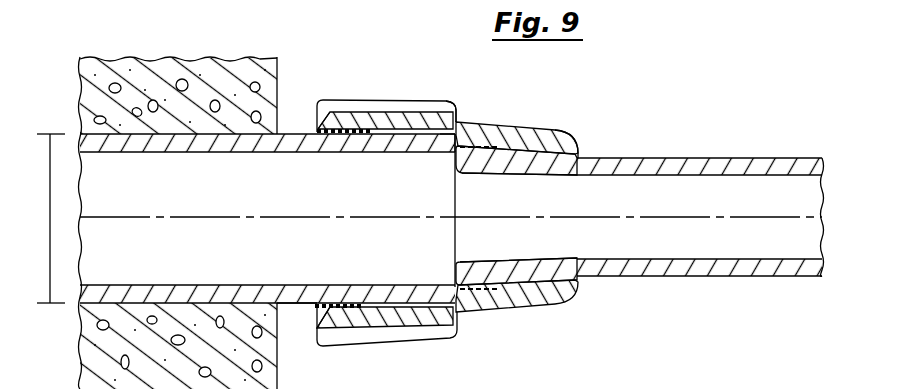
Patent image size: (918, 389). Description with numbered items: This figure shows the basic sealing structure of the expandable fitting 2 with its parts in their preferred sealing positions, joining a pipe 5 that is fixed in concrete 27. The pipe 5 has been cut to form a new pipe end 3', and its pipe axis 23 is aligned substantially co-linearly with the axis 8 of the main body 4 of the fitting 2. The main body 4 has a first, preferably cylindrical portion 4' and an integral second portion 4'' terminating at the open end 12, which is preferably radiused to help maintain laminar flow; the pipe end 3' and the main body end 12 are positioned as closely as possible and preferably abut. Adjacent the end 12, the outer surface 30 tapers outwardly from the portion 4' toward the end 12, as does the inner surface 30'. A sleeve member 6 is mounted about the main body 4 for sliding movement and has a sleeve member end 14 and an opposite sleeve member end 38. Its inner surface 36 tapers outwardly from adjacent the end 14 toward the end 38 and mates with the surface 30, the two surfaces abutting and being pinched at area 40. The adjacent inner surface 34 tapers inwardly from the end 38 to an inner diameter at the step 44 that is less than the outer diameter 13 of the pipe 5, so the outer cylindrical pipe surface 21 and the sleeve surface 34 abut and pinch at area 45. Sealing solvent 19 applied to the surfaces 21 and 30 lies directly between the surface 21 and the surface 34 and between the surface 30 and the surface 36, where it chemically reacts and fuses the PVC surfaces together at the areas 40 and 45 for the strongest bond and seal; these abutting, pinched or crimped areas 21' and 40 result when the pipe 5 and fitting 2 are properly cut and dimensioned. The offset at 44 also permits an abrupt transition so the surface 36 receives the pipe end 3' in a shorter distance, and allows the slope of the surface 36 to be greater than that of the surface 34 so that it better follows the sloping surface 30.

The fitting 2 is at (569, 161).
The new pipe end 3' is at (396, 210).
The main body 4 is at (699, 173).
The first cylindrical portion 4' is at (794, 192).
The second portion 4'' is at (517, 182).
The pipe 5 is at (297, 306).
The sleeve member 6 is at (389, 180).
The main body axis 8 is at (666, 217).
The open end of main body 12 is at (457, 253).
The outer diameter of pipe 13 is at (50, 203).
The sleeve member end 14 is at (578, 145).
The sealing solvent 19 is at (316, 130).
The outer cylindrical surface of pipe 21 is at (267, 218).
The abutting pinched area 21' is at (385, 187).
The pipe axis 23 is at (138, 217).
The concrete 27 is at (160, 58).
The outwardly tapering outer surface 30 is at (501, 180).
The inner surface of main body 30' is at (541, 256).
The inner sleeve surface 34 is at (324, 120).
The tapering inner sleeve surface 36 is at (484, 132).
The other sleeve member end 38 is at (316, 129).
The abutting area 40 is at (553, 162).
The step 44 is at (440, 143).
The pinched area 45 is at (440, 110).